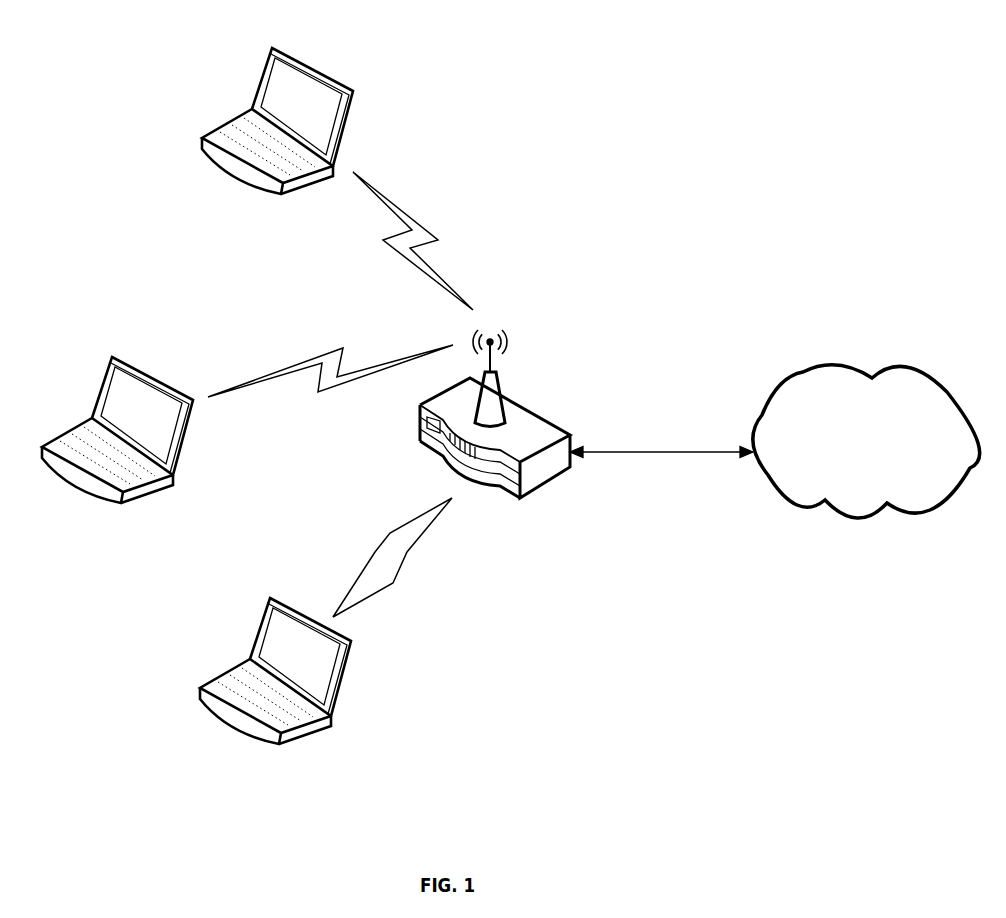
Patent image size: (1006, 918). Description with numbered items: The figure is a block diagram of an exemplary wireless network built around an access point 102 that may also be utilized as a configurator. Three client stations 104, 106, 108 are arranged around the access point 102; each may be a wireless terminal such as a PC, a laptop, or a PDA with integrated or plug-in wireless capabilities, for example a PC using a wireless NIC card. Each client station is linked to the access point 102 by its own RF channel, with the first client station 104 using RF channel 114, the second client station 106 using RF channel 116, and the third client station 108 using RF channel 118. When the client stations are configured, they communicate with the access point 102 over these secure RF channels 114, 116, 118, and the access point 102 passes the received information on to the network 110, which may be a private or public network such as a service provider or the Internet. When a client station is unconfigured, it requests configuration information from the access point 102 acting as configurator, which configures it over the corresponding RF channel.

The access point 102 is at (543, 418).
The client station 104 is at (268, 62).
The client station 106 is at (104, 371).
The client station 108 is at (261, 602).
The network 110 is at (806, 371).
The RF channel 114 is at (396, 203).
The RF channel 116 is at (311, 357).
The RF channel 118 is at (375, 553).